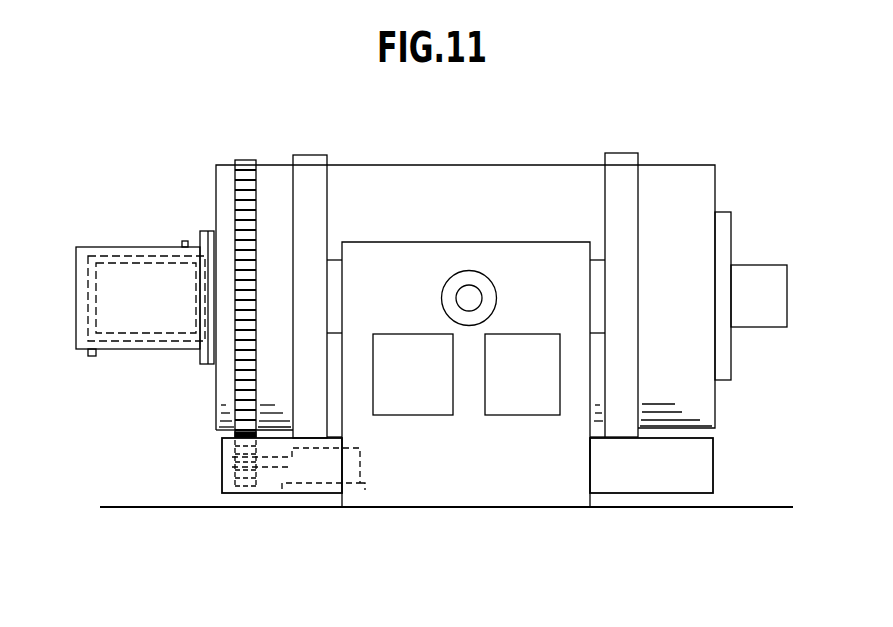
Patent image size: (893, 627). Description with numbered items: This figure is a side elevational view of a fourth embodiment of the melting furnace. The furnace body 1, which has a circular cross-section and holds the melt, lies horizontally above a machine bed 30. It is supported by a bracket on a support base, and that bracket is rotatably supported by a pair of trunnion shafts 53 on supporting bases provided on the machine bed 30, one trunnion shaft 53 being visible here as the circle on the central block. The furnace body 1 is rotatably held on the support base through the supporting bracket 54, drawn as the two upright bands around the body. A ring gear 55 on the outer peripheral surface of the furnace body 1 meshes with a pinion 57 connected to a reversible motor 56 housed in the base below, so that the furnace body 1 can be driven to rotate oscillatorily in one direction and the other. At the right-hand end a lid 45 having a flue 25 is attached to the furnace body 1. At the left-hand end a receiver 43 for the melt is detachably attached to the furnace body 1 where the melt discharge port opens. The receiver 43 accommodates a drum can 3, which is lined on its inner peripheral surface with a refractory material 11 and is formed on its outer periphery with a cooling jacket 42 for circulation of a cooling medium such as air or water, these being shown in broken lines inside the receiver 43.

The furnace body 1 is at (460, 163).
The drum can 3 is at (166, 255).
The refractory material 11 is at (118, 340).
The flue 25 is at (757, 280).
The machine bed 30 is at (474, 563).
The cooling jacket 42 is at (163, 345).
The receiver 43 is at (117, 240).
The lid 45 is at (722, 230).
The trunnion shafts 53 is at (472, 296).
The supporting bracket 54 is at (314, 170).
The ring gear 55 is at (244, 160).
The reversible motor 56 is at (316, 475).
The pinion 57 is at (243, 490).